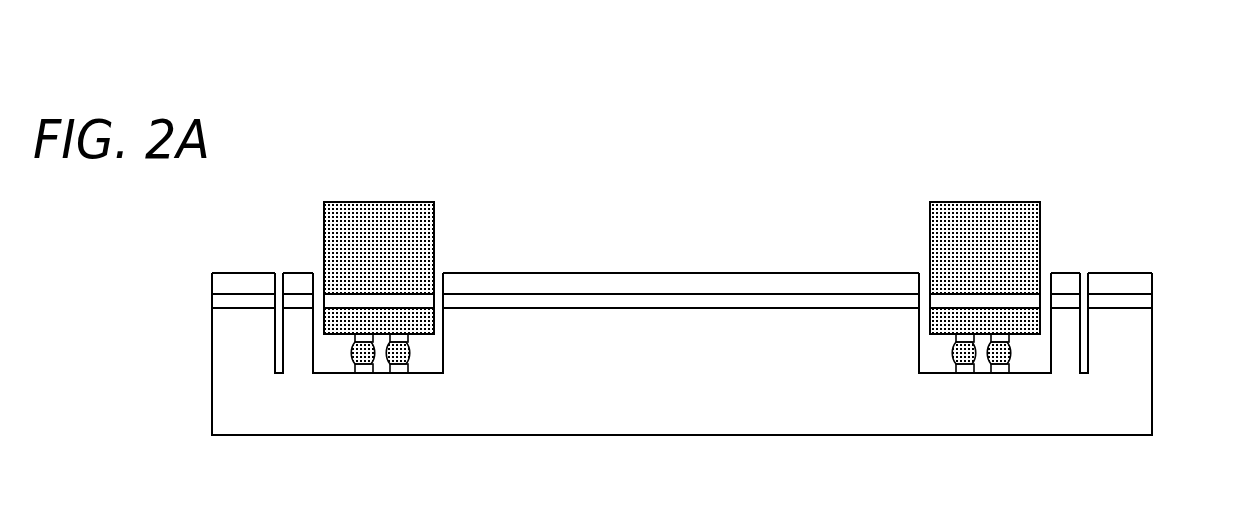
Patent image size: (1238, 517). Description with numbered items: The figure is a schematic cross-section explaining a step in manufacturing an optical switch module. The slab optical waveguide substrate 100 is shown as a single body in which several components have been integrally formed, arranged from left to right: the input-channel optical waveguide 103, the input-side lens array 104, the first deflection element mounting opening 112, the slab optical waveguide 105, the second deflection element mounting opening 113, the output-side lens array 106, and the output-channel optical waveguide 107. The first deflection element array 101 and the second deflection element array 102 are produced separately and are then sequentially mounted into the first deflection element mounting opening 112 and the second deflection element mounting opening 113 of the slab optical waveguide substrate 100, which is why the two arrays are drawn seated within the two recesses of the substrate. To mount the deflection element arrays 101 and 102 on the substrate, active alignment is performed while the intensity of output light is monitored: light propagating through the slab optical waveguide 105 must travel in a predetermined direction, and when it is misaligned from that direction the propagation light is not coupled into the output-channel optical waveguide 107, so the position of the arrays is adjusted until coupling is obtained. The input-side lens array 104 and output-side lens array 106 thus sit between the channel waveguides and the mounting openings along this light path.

The slab optical waveguide substrate 100 is at (1118, 110).
The first deflection element array 101 is at (385, 201).
The second deflection element array 102 is at (985, 201).
The input-channel optical waveguide 103 is at (240, 272).
The input-side lens array 104 is at (279, 271).
The slab optical waveguide 105 is at (700, 271).
The output-side lens array 106 is at (1084, 271).
The output-channel optical waveguide 107 is at (1125, 271).
The first deflection element mounting opening 112 is at (438, 268).
The second deflection element mounting opening 113 is at (922, 268).